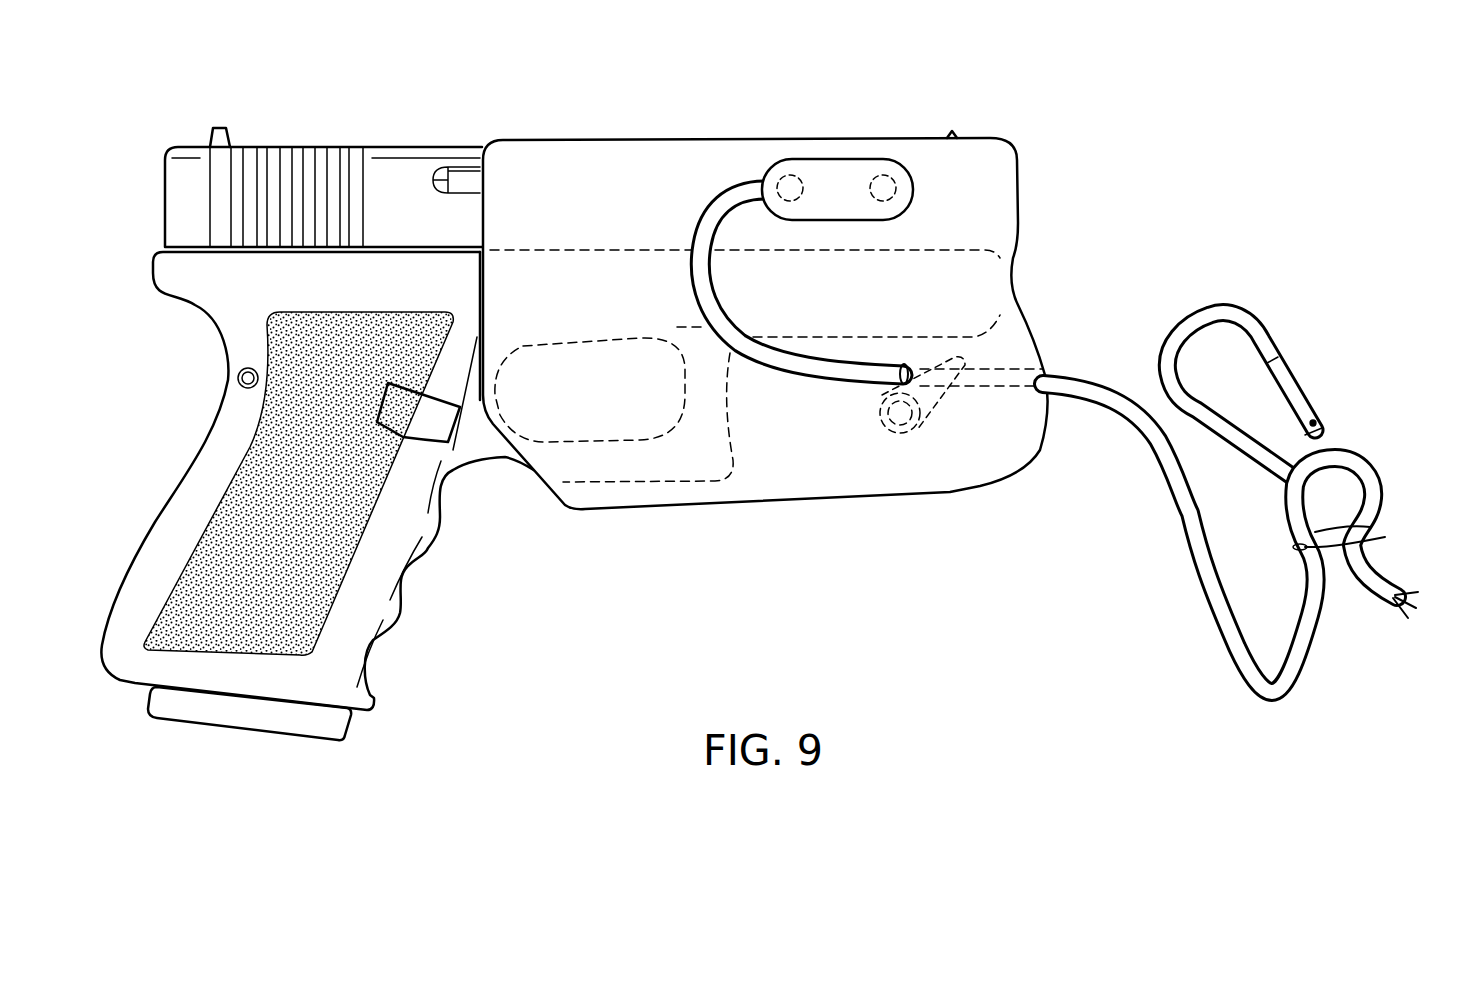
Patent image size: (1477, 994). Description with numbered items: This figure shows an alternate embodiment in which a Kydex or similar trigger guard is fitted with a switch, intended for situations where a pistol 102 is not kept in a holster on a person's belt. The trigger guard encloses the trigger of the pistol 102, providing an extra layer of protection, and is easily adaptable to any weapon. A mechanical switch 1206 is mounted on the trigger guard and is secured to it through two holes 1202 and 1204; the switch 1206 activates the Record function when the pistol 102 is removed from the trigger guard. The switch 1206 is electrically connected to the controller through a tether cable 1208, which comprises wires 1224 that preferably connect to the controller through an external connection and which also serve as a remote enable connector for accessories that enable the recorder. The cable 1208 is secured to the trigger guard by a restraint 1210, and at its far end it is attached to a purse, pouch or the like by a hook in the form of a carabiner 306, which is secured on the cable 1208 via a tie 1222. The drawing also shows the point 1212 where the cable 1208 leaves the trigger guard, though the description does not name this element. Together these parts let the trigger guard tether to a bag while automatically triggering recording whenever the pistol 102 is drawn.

The pistol 102 is at (440, 147).
The carabiner 306 is at (1220, 306).
The hole 1202 is at (883, 175).
The hole 1204 is at (790, 175).
The mechanical switch 1206 is at (913, 188).
The tether cable 1208 is at (690, 225).
The restraint 1210 is at (880, 420).
The strap end 1212 is at (902, 362).
The tie 1222 is at (1387, 538).
The wires 1224 is at (1397, 606).